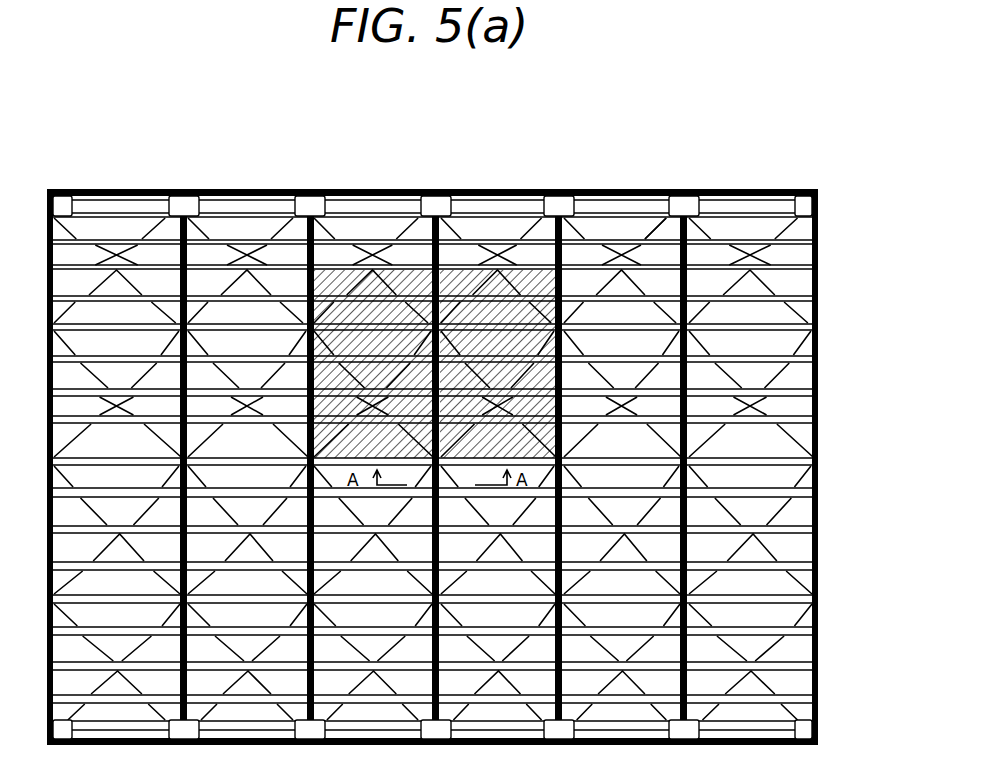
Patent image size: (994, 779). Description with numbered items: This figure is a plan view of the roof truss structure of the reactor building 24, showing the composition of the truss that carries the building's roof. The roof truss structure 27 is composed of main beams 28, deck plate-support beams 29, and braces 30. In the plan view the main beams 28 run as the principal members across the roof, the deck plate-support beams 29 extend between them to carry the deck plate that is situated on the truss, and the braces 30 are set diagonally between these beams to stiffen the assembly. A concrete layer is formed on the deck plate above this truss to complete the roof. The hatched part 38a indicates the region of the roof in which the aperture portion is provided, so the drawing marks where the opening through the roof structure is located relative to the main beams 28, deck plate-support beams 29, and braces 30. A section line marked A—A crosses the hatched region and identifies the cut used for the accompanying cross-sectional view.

The reactor building 24 is at (821, 250).
The roof truss structure 27 is at (658, 122).
The main beams 28 is at (441, 262).
The deck plate-support beams 29 is at (512, 240).
The braces 30 is at (584, 232).
The aperture portion region 38a is at (318, 275).